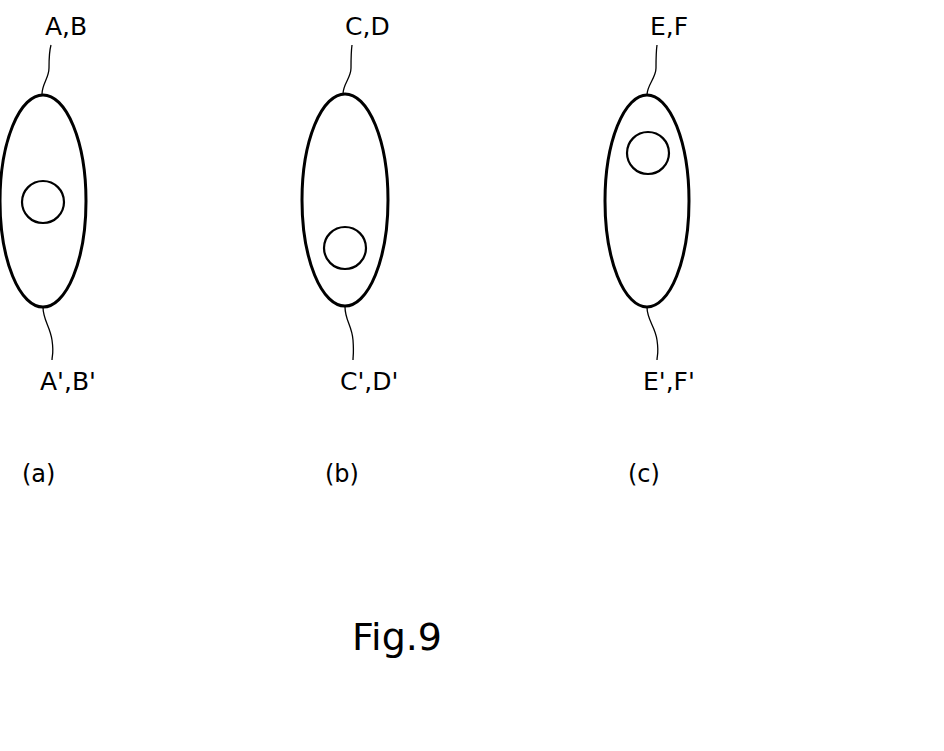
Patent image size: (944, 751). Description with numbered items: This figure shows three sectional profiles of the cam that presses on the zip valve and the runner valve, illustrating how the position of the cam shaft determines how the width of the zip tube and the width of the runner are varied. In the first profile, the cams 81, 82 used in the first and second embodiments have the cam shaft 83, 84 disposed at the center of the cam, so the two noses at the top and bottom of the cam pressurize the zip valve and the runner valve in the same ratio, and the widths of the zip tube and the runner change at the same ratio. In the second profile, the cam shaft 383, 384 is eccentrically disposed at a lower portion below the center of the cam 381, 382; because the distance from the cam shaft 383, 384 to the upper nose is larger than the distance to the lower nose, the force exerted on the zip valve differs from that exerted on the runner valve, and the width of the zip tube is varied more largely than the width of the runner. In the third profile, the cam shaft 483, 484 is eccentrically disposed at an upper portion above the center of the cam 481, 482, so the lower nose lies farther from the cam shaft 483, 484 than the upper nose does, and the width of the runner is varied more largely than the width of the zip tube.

The cam 81 is at (97, 201).
The cam 82 is at (65, 137).
The cam shaft 83 is at (108, 202).
The cam shaft 84 is at (52, 202).
The cam 381 is at (416, 200).
The cam 382 is at (373, 181).
The cam shaft 383 is at (427, 248).
The cam shaft 384 is at (355, 248).
The cam 481 is at (720, 201).
The cam 482 is at (673, 232).
The cam shaft 483 is at (730, 153).
The cam shaft 484 is at (658, 152).